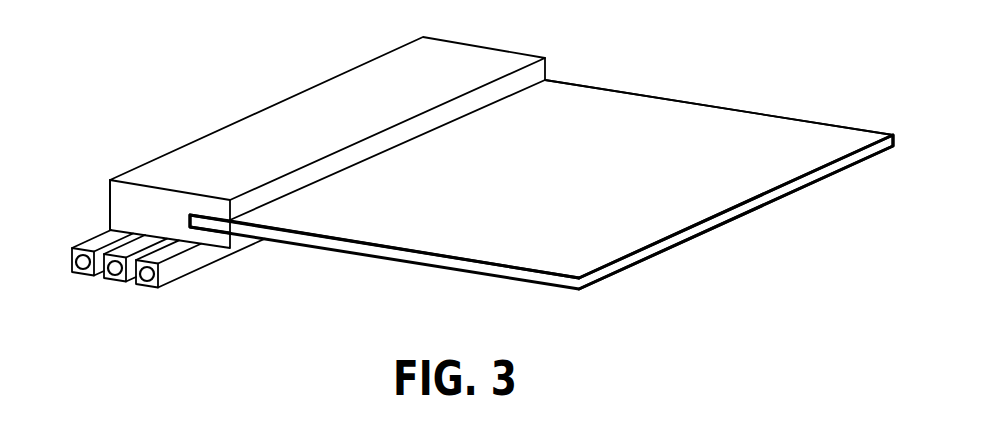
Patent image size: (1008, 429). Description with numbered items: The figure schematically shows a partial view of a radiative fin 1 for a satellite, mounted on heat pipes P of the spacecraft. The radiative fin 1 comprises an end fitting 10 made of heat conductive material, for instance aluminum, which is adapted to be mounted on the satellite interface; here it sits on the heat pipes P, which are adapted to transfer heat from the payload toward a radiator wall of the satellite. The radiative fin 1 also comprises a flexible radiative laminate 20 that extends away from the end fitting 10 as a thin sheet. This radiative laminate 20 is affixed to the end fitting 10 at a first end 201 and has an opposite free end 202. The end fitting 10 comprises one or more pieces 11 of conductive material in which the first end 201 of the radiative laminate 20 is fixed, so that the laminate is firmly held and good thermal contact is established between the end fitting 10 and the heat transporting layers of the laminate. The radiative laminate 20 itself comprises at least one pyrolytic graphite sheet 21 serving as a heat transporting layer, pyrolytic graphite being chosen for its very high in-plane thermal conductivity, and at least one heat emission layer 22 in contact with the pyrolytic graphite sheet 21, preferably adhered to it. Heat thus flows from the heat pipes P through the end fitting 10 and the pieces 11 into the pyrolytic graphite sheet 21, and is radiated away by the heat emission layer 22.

The radiative fin 1 is at (205, 88).
The end fitting 10 is at (365, 78).
The pieces of conductive material 11 is at (212, 208).
The flexible radiative laminate 20 is at (610, 220).
The pyrolytic graphite sheet 21 is at (398, 250).
The heat emission layer 22 is at (635, 112).
The first end of the radiative laminate 201 is at (213, 223).
The free end of the radiative laminate 202 is at (740, 207).
The heat pipes P is at (172, 262).